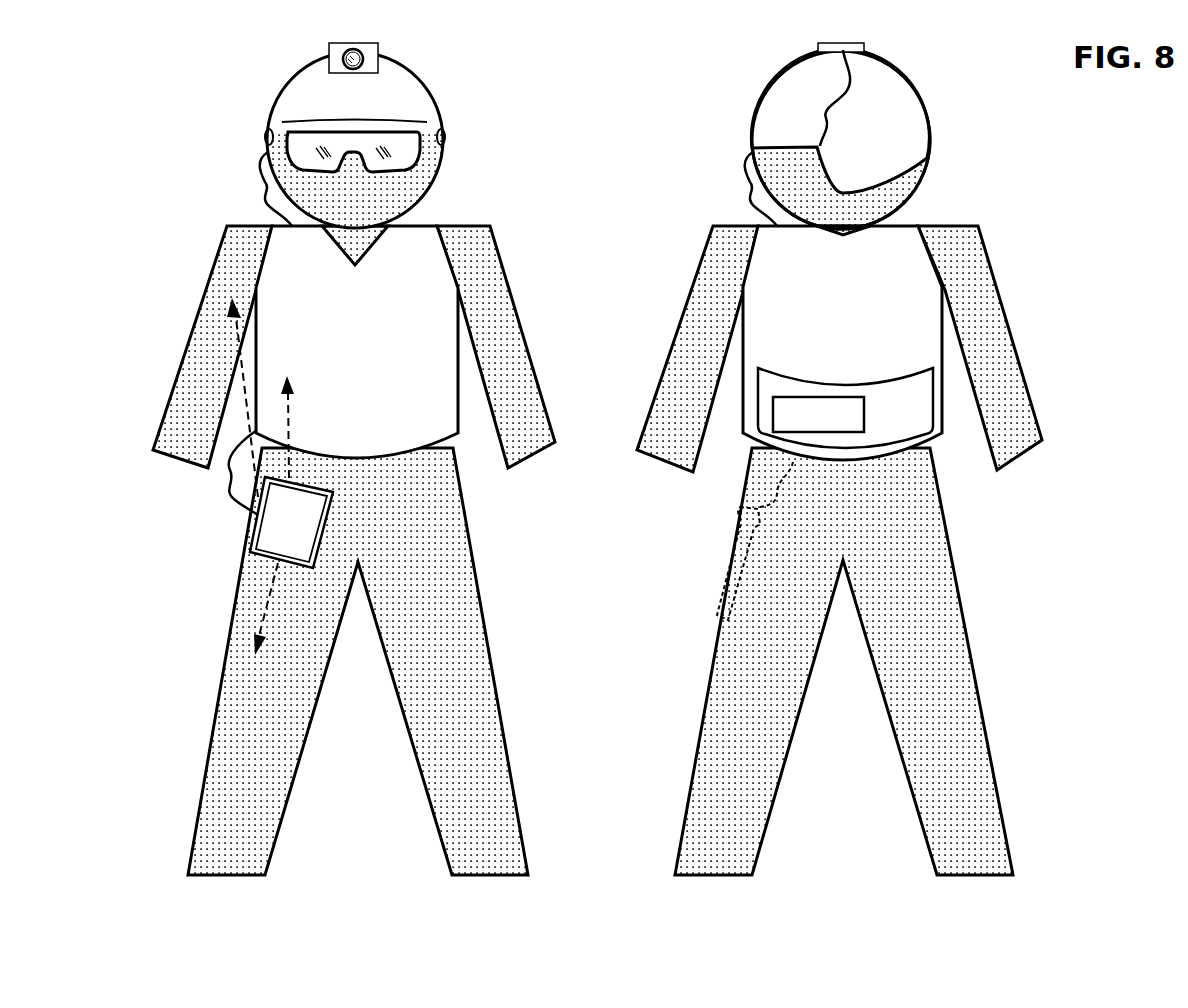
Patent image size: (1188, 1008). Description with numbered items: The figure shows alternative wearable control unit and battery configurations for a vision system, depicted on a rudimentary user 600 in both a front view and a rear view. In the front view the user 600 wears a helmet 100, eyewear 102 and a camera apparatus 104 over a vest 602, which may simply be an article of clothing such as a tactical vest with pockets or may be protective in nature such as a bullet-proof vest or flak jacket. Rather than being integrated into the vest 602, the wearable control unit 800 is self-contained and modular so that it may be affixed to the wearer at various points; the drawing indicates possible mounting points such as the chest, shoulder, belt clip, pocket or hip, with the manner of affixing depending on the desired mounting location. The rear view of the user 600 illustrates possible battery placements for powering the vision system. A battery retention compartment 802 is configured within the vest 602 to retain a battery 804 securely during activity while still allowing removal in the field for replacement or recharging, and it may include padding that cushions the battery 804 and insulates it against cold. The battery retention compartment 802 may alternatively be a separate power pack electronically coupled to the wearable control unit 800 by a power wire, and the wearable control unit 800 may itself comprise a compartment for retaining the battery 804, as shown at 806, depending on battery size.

The helmet 100 is at (262, 119).
The eyewear 102 is at (413, 162).
The camera apparatus 104 is at (372, 74).
The user 600 is at (500, 243).
The vest 602 is at (460, 432).
The wearable control unit 800 is at (247, 553).
The battery retention compartment 802 is at (843, 383).
The battery 804 is at (867, 407).
The compartment for retaining battery 806 is at (725, 573).